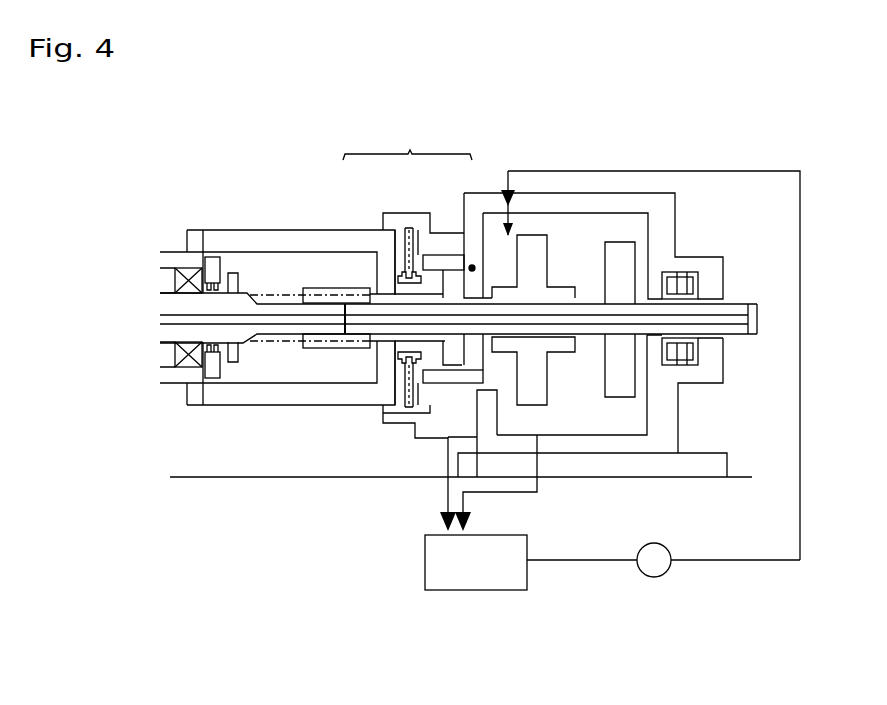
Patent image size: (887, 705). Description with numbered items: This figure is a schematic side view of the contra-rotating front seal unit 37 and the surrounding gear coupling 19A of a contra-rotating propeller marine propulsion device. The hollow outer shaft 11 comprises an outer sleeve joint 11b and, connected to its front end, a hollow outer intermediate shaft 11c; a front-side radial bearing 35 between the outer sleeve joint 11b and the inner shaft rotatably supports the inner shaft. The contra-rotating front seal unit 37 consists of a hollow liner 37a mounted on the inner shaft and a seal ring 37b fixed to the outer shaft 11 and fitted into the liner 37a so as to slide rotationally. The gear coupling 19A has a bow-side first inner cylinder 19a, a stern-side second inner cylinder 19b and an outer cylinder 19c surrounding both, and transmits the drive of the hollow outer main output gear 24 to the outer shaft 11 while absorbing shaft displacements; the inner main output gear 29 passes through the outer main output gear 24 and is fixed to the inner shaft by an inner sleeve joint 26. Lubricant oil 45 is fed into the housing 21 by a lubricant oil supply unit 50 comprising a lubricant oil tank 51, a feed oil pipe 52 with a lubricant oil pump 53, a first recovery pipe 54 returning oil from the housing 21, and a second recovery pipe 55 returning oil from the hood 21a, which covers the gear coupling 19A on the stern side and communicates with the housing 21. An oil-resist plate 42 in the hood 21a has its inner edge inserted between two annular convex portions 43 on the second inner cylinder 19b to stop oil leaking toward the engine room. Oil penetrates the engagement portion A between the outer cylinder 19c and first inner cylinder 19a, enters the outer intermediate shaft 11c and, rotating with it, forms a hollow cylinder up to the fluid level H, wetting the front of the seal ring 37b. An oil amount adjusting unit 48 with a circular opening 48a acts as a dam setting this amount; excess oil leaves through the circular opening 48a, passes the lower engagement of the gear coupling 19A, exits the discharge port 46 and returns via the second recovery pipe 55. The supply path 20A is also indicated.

The outer shaft 11 is at (260, 268).
The outer sleeve joint 11b is at (173, 257).
The outer intermediate shaft 11c is at (225, 240).
The gear coupling 19A is at (408, 298).
The first inner cylinder 19a is at (467, 278).
The second inner cylinder 19b is at (410, 288).
The outer cylinder 19c is at (442, 262).
The cooling medium supply 20A is at (558, 190).
The housing 21 is at (677, 223).
The hood 21a is at (473, 232).
The outer main output gear 24 is at (545, 294).
The inner sleeve joint 26 is at (350, 300).
The inner main output gear 29 is at (616, 352).
The front-side radial bearing 35 is at (185, 365).
The contra-rotating front seal unit 37 is at (229, 366).
The liner 37a is at (233, 367).
The seal ring 37b is at (215, 373).
The oil-resist plate 42 is at (390, 430).
The annular convex portions 43 is at (400, 355).
The lubricant oil 45 is at (515, 232).
The discharge port 46 is at (442, 412).
The oil amount adjusting unit 48 is at (382, 305).
The circular opening 48a is at (362, 305).
The lubricant oil supply unit 50 is at (584, 399).
The lubricant oil tank 51 is at (425, 569).
The feed oil pipe 52 is at (623, 171).
The lubricant oil pump 53 is at (655, 567).
The first recovery pipe 54 is at (467, 502).
The second recovery pipe 55 is at (445, 487).
The engagement portion A is at (475, 268).
The fluid level H is at (297, 348).